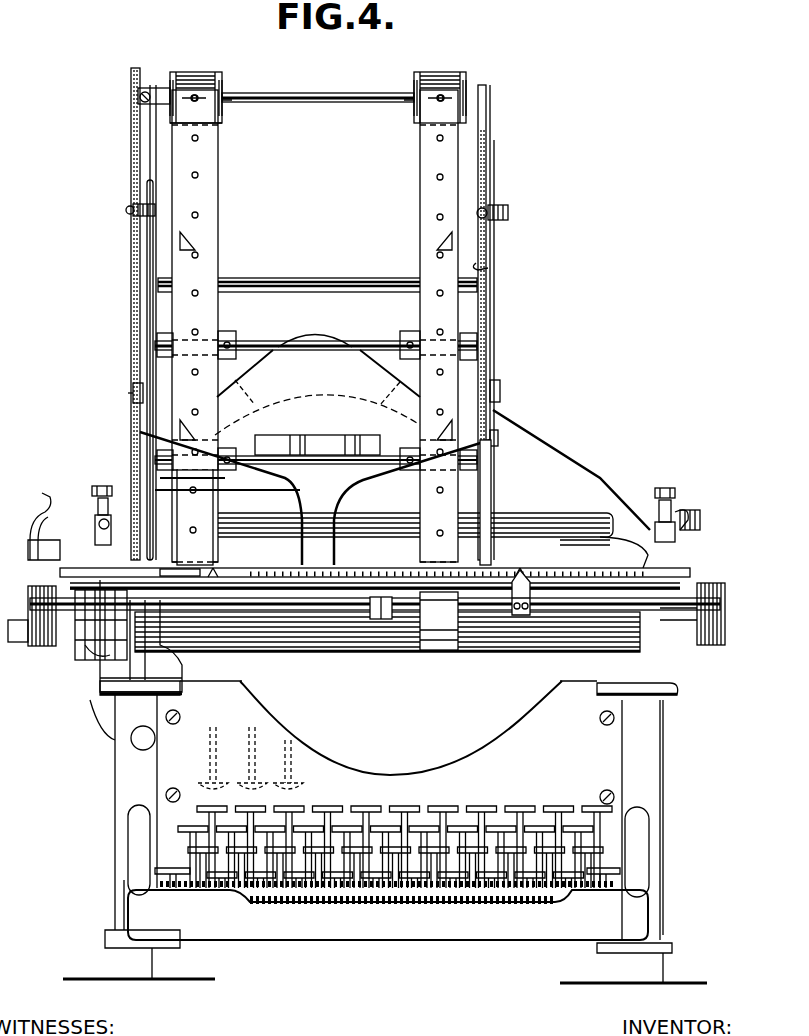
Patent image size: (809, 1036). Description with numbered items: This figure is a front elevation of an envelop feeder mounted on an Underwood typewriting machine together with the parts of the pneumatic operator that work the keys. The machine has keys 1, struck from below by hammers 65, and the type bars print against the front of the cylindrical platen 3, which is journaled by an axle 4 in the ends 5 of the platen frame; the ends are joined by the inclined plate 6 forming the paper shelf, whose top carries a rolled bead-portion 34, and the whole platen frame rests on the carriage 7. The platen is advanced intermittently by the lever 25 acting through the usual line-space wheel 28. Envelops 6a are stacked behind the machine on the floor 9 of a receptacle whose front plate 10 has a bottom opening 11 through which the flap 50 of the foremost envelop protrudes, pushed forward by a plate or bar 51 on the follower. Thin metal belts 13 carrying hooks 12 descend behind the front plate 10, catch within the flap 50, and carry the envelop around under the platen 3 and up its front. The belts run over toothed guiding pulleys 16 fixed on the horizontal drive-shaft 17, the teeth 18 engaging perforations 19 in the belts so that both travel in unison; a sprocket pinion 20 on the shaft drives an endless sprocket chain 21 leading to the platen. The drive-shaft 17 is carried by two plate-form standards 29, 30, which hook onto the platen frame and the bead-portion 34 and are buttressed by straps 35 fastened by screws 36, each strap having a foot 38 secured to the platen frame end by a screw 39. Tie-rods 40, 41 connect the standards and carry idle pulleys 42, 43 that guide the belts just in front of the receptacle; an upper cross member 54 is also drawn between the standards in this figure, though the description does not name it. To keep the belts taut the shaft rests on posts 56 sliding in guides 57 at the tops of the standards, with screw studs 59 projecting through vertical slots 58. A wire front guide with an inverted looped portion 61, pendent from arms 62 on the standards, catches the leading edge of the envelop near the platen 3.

The keys 1 is at (505, 808).
The cylindrical platen 3 is at (350, 652).
The axle 4 is at (366, 613).
The ends of the platen frame 5 is at (141, 636).
The inclined plate 6 is at (568, 549).
The envelops 6a is at (255, 389).
The carriage 7 is at (110, 570).
The floor 9 is at (233, 491).
The front plate 10 is at (318, 354).
The opening 11 is at (312, 340).
The hooks 12 is at (452, 438).
The work-supporting belts 13 is at (315, 343).
The guiding pulleys 16 is at (414, 84).
The drive-shaft 17 is at (323, 102).
The teeth 18 is at (446, 72).
The perforations 19 is at (200, 330).
The sprocket pinion 20 is at (143, 88).
The sprocket chain 21 is at (130, 300).
The lever 25 is at (30, 522).
The line-space wheel 28 is at (82, 650).
The standard 29 is at (150, 508).
The standard 30 is at (491, 498).
The bead-portion 34 is at (542, 514).
The strap 35 is at (580, 465).
The screw 36 is at (500, 390).
The foot 38 is at (655, 520).
The screw 39 is at (675, 494).
The tie-rod 40 is at (322, 350).
The tie-rod 41 is at (298, 463).
The idle pulleys 42 is at (412, 332).
The idle pulleys 43 is at (412, 448).
The flap 50 is at (340, 400).
The plate or bar 51 is at (290, 443).
The upper cross bar 54 is at (314, 278).
The posts 56 is at (488, 158).
The guides 57 is at (490, 266).
The vertical slots 58 is at (495, 246).
The screw studs 59 is at (508, 212).
The looped portion 61 is at (300, 546).
The arms 62 is at (211, 490).
The hammers 65 is at (250, 740).